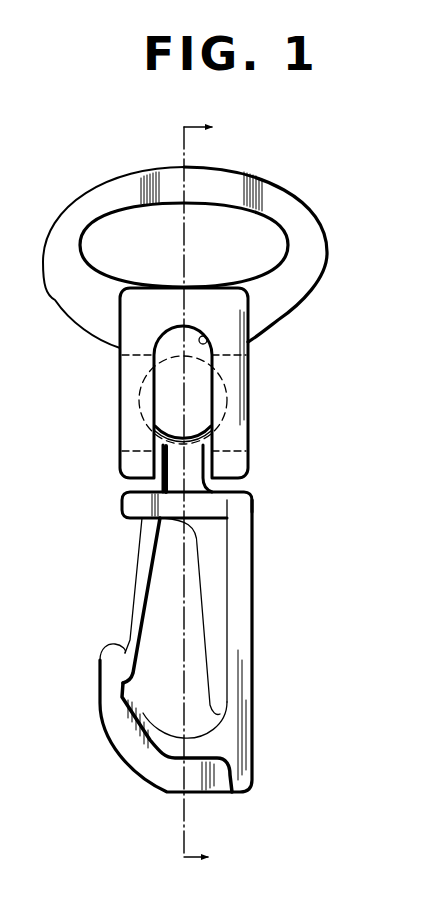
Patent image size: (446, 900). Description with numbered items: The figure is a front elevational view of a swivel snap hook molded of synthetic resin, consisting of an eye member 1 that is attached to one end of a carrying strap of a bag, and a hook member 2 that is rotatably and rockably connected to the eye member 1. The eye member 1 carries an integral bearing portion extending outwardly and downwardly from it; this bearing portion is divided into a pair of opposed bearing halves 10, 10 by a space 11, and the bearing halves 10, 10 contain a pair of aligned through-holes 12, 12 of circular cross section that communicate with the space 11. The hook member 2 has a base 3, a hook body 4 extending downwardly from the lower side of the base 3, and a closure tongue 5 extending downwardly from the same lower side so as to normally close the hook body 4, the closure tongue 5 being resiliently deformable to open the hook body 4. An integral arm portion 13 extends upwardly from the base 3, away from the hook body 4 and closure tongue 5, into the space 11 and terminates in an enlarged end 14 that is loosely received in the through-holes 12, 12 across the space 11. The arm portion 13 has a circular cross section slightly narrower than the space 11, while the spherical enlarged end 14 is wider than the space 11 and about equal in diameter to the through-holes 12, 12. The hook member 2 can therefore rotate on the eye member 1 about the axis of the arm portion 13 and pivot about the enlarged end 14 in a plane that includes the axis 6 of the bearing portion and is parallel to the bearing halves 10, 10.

The eye member 1 is at (301, 196).
The hook member 2 is at (259, 615).
The base 3 is at (132, 508).
The hook body 4 is at (120, 708).
The closure tongue 5 is at (142, 583).
The axis of the bearing portion 6 is at (187, 258).
The bearing halves 10 is at (128, 460).
The space 11 is at (207, 341).
The through-holes 12 is at (120, 445).
The arm portion 13 is at (205, 484).
The enlarged end 14 is at (200, 395).